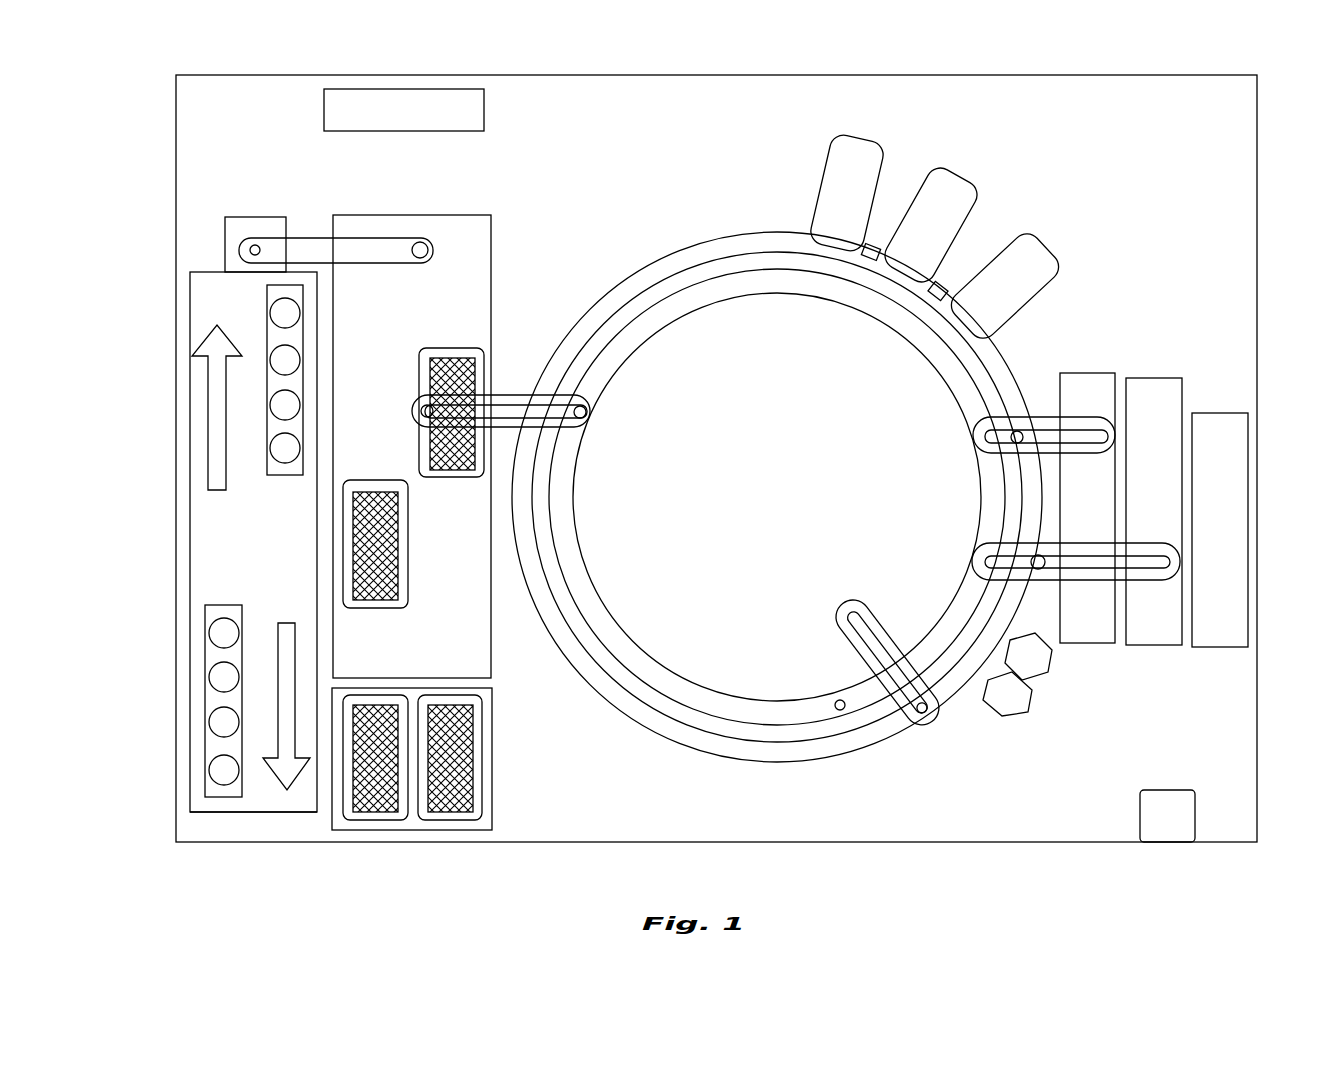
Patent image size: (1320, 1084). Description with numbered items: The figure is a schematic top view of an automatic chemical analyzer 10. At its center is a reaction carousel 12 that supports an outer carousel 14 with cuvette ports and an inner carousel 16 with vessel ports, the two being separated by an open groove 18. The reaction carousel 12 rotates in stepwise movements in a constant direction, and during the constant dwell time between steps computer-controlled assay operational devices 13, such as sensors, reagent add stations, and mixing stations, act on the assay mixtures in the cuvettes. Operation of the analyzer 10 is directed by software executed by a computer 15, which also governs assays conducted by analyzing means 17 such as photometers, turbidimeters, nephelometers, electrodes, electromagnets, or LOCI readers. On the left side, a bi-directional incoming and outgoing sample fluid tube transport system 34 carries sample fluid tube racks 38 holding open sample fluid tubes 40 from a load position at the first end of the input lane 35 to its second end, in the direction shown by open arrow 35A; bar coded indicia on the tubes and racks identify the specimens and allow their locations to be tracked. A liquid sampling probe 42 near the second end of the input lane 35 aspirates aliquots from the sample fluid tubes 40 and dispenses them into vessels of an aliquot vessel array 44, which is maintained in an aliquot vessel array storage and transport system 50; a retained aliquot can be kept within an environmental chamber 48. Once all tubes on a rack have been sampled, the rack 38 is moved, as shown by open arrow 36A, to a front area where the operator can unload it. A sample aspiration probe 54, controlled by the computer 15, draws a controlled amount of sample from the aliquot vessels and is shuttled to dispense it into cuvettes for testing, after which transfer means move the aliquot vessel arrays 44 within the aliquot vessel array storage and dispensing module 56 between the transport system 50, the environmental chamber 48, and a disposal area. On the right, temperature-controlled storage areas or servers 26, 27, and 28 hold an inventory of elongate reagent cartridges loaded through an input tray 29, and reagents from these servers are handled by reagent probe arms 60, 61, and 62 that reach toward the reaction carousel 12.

The automatic chemical analyzer 10 is at (175, 95).
The reaction carousel 12 is at (648, 218).
The assay operational devices 13 is at (1040, 690).
The outer carousel 14 is at (733, 245).
The computer 15 is at (1167, 816).
The inner carousel 16 is at (782, 280).
The analyzing means 17 is at (892, 155).
The open groove 18 is at (717, 265).
The temperature-controlled storage area 26 is at (777, 497).
The temperature-controlled storage area 27 is at (1155, 647).
The temperature-controlled storage area 28 is at (1097, 645).
The input tray 29 is at (1222, 649).
The sample fluid tube transport system 34 is at (191, 638).
The input lane 35 is at (215, 543).
The open arrow 35A is at (212, 425).
The open arrow 36A is at (284, 666).
The sample fluid tube rack 38 is at (197, 798).
The sample fluid tube 40 is at (220, 632).
The liquid sampling probe 42 is at (310, 225).
The aliquot vessel array 44 is at (474, 352).
The environmental chamber 48 is at (484, 93).
The aliquot vessel array storage and transport system 50 is at (432, 215).
The sample aspiration probe 54 is at (520, 393).
The aliquot vessel array storage and dispensing module 56 is at (492, 825).
The reagent probe arm 60 is at (856, 612).
The reagent probe arm 61 is at (1183, 540).
The reagent probe arm 62 is at (1117, 418).